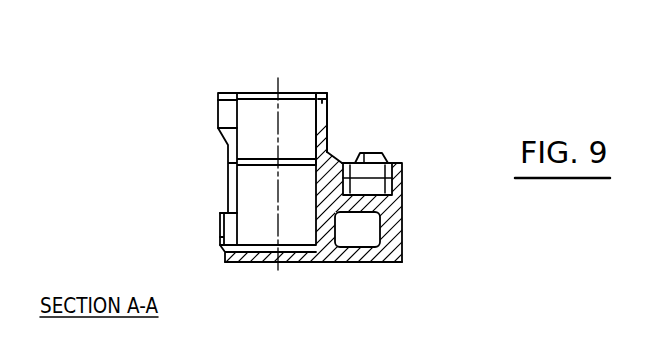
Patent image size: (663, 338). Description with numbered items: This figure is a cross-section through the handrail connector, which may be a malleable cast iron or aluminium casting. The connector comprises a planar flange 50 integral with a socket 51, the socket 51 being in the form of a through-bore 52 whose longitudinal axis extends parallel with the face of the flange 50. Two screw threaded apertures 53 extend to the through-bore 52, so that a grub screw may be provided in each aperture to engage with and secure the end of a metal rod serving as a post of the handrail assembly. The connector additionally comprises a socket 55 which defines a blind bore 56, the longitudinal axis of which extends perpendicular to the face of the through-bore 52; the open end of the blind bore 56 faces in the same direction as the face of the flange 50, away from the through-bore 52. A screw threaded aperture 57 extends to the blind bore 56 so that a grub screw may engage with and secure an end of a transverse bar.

The planar flange 50 is at (402, 222).
The socket 51 is at (224, 168).
The through-bore 52 is at (308, 117).
The screw threaded apertures 53 is at (217, 115).
The socket 55 is at (388, 158).
The blind bore 56 is at (392, 174).
The screw threaded aperture 57 is at (367, 157).